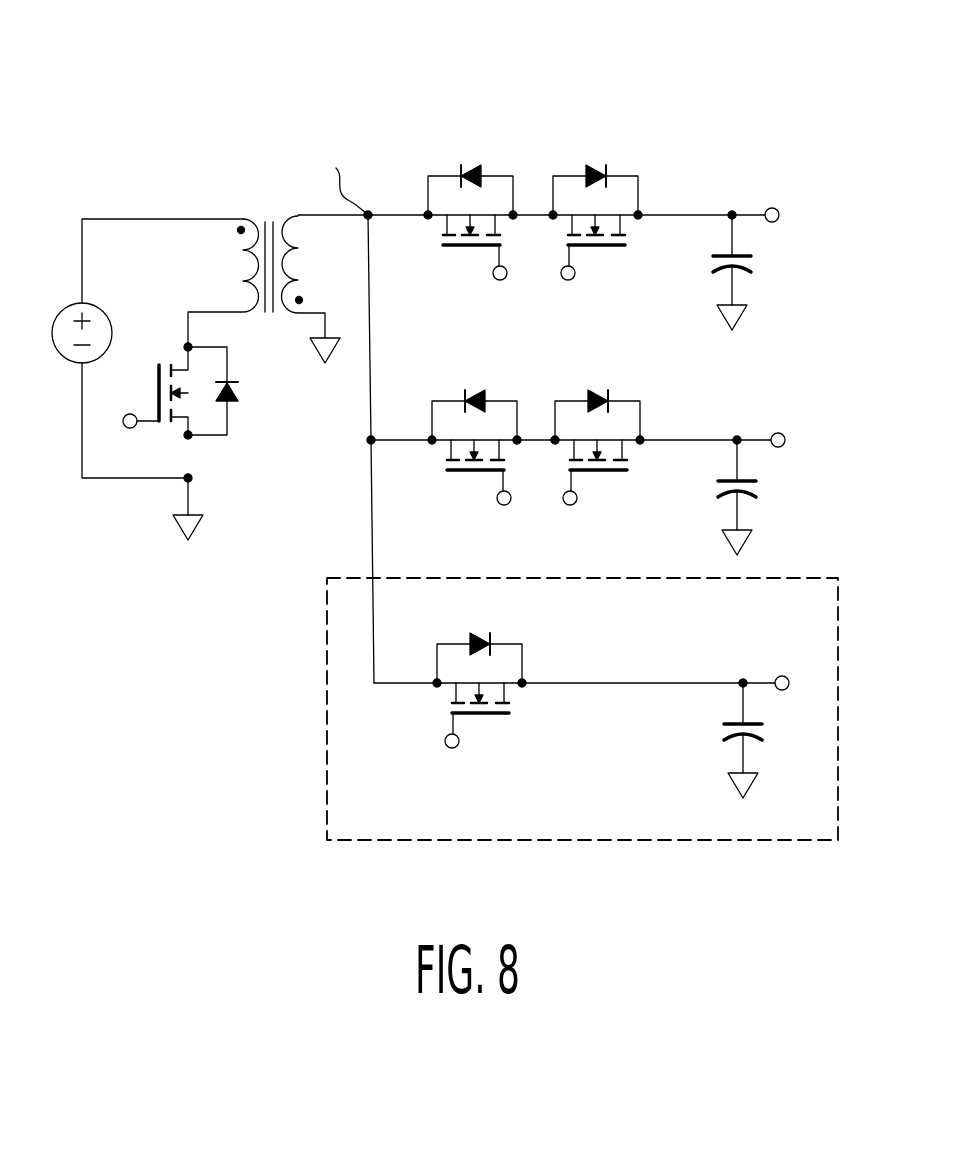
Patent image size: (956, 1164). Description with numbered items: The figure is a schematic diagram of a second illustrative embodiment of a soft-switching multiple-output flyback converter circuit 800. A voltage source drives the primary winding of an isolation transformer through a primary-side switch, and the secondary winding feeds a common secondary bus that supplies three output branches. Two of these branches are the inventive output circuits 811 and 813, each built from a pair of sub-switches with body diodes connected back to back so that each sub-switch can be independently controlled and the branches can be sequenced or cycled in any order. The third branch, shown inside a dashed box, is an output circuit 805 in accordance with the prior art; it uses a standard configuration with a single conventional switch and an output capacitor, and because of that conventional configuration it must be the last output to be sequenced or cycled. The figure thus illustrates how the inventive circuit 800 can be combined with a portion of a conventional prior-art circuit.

The soft-switching flyback converter circuit 800 is at (700, 90).
The output circuit 805 is at (328, 690).
The output circuit 811 is at (812, 283).
The output circuit 813 is at (814, 493).